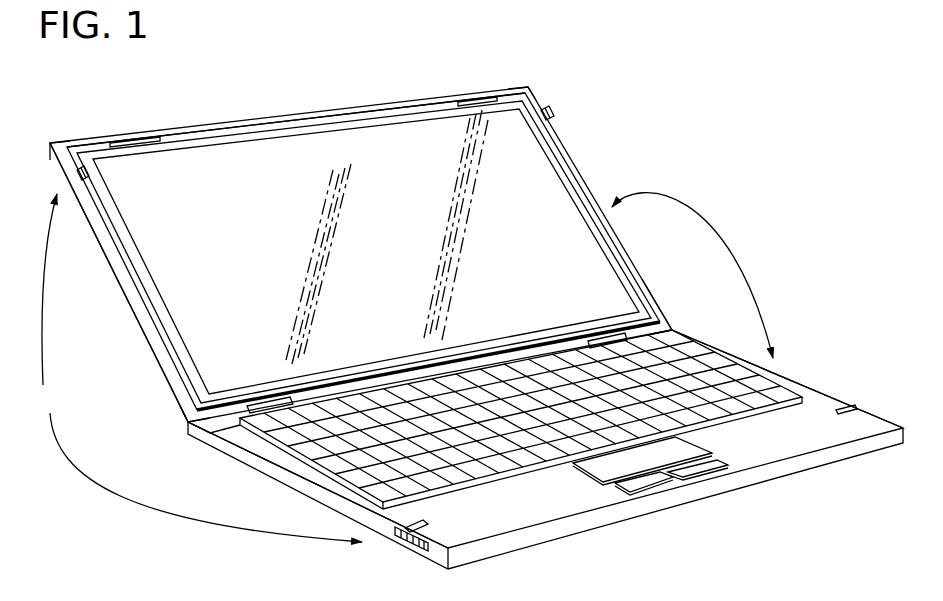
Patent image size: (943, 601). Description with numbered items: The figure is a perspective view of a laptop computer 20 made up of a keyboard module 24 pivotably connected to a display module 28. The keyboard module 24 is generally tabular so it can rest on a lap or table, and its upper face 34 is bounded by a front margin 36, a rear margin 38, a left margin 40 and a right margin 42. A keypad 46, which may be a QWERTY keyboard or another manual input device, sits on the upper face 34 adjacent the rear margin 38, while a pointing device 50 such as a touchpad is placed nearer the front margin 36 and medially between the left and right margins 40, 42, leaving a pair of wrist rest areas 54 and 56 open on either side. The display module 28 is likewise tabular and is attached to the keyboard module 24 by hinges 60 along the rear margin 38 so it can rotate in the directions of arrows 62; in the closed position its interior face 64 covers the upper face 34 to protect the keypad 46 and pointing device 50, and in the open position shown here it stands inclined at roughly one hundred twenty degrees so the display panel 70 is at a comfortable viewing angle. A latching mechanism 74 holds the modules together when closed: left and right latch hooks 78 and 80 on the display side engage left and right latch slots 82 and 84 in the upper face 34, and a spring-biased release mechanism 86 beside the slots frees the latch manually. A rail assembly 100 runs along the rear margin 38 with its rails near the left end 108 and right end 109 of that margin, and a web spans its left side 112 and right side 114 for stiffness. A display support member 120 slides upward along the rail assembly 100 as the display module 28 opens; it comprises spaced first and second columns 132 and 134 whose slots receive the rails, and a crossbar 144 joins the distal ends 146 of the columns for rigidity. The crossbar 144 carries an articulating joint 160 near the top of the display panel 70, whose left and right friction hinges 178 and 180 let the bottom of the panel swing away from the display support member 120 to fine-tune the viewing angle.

The laptop computer 20 is at (718, 166).
The keyboard module 24 is at (790, 367).
The display module 28 is at (575, 138).
The upper face 34 is at (823, 407).
The front margin 36 is at (788, 466).
The rear margin 38 is at (227, 419).
The left margin 40 is at (337, 499).
The right margin 42 is at (753, 363).
The keypad 46 is at (695, 389).
The pointing device 50 is at (678, 452).
The wrist rest area 54 is at (511, 503).
The wrist rest area 56 is at (779, 439).
The hinges 60 is at (267, 402).
The arrows 62 is at (746, 235).
The interior face 64 is at (359, 149).
The display panel 70 is at (533, 196).
The latching mechanism 74 is at (197, 368).
The left latch hook 78 is at (92, 172).
The right latch hook 80 is at (555, 112).
The left latch slot 82 is at (420, 526).
The right latch slot 84 is at (848, 409).
The spring-biased release mechanism 86 is at (402, 541).
The rail assembly 100 is at (142, 363).
The left end 108 is at (199, 425).
The right end 109 is at (678, 328).
The left side 112 is at (170, 406).
The right side 114 is at (660, 298).
The display support member 120 is at (128, 318).
The first column 132 is at (100, 245).
The second column 134 is at (590, 187).
The crossbar 144 is at (209, 125).
The distal ends 146 is at (52, 142).
The articulating joint 160 is at (455, 90).
The left friction hinge 178 is at (137, 135).
The right friction hinge 180 is at (474, 98).